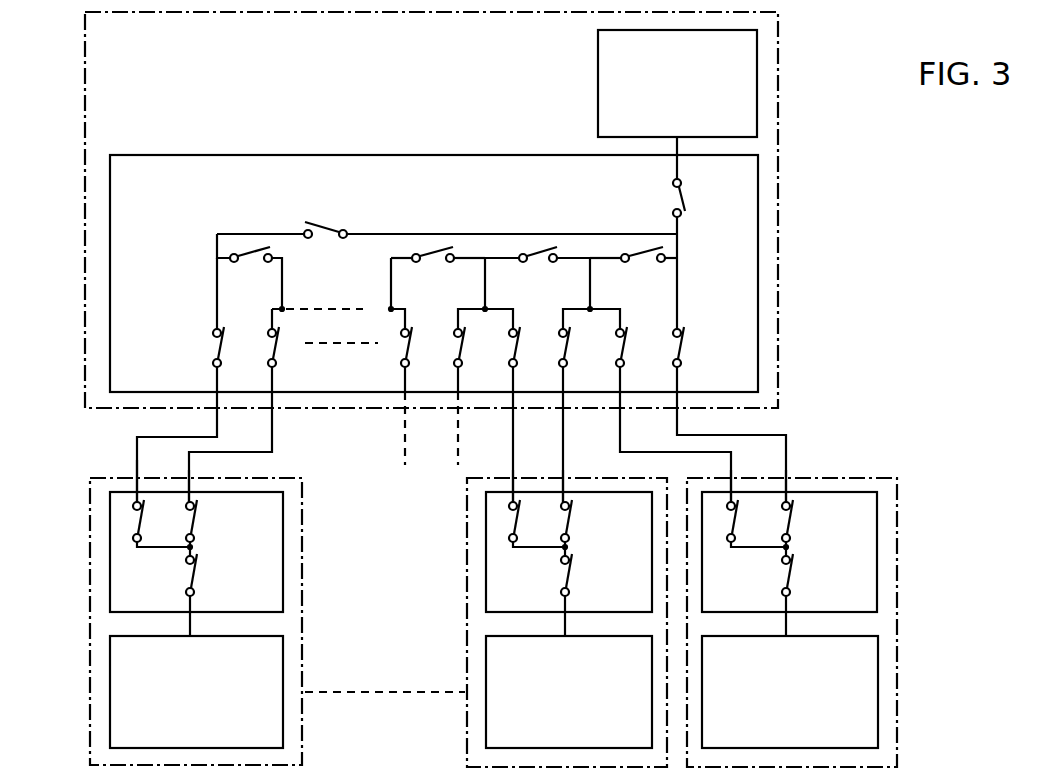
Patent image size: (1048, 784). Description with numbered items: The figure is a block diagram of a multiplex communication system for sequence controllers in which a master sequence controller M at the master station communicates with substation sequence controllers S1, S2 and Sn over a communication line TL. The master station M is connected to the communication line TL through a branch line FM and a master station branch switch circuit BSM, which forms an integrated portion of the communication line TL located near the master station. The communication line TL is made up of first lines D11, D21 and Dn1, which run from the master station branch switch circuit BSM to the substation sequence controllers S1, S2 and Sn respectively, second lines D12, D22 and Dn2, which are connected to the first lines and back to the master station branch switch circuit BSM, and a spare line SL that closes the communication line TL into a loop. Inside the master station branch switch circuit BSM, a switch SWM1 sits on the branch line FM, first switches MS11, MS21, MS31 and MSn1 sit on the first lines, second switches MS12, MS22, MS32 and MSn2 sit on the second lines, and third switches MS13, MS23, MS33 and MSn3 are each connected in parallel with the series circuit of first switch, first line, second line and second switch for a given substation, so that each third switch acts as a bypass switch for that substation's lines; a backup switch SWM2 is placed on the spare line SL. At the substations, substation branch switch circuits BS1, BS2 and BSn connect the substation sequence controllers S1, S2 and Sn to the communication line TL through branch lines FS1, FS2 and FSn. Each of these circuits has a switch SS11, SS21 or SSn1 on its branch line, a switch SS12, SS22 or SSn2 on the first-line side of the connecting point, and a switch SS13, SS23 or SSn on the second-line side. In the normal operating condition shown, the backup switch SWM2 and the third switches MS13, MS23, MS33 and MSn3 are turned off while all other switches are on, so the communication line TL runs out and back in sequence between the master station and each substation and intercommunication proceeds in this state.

The master sequence controller M is at (598, 32).
The master station branch switch circuit BSM is at (110, 155).
The branch line FM is at (680, 148).
The switch SWM1 is at (683, 196).
The backup switch SWM2 is at (326, 224).
The spare line SL is at (377, 234).
The third switch MSn3 is at (252, 250).
The second switch MSn2 is at (212, 343).
The first switch MSn1 is at (275, 342).
The third switch MS33 is at (435, 250).
The second switch MS32 is at (395, 338).
The first switch MS31 is at (453, 345).
The third switch MS23 is at (537, 250).
The second switch MS22 is at (508, 355).
The first switch MS21 is at (558, 355).
The third switch MS13 is at (645, 250).
The second switch MS12 is at (625, 350).
The first switch MS11 is at (683, 355).
The communication line TL is at (152, 436).
The second line Dn2 is at (135, 450).
The first line Dn1 is at (272, 452).
The second line D22 is at (513, 428).
The first line D21 is at (565, 428).
The second line D12 is at (731, 475).
The first line D11 is at (789, 455).
The substation sequence controller Sn is at (110, 636).
The substation sequence controller S2 is at (486, 636).
The substation sequence controller S1 is at (878, 637).
The substation branch switch circuit BSn is at (110, 492).
The substation branch switch circuit BS2 is at (486, 492).
The substation branch switch circuit BS1 is at (877, 492).
The branch line FSn is at (190, 622).
The branch line FS2 is at (565, 622).
The branch line FS1 is at (786, 622).
The switch SSn is at (136, 530).
The switch SSn2 is at (193, 520).
The switch SSn1 is at (196, 568).
The switch SS23 is at (513, 532).
The switch SS22 is at (568, 520).
The switch SS21 is at (571, 568).
The switch SS13 is at (731, 532).
The switch SS12 is at (789, 520).
The switch SS11 is at (792, 568).